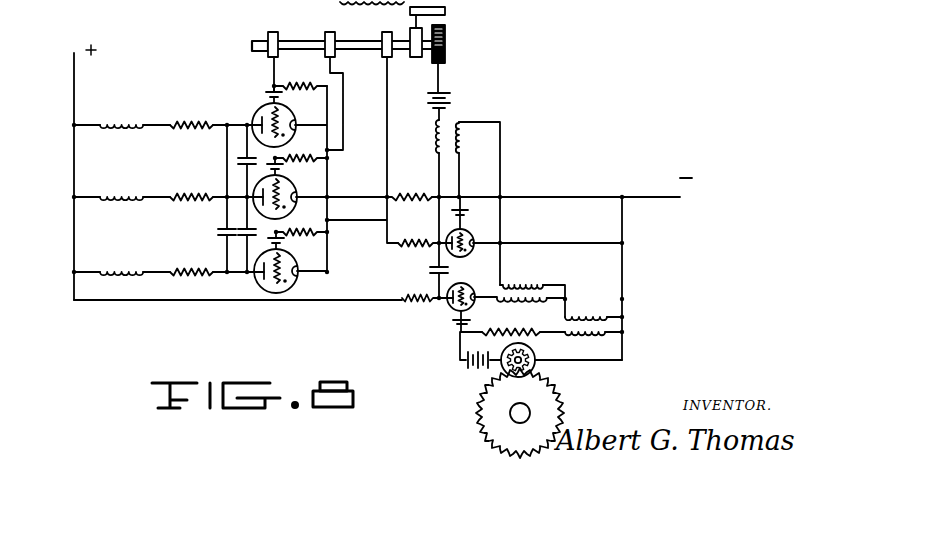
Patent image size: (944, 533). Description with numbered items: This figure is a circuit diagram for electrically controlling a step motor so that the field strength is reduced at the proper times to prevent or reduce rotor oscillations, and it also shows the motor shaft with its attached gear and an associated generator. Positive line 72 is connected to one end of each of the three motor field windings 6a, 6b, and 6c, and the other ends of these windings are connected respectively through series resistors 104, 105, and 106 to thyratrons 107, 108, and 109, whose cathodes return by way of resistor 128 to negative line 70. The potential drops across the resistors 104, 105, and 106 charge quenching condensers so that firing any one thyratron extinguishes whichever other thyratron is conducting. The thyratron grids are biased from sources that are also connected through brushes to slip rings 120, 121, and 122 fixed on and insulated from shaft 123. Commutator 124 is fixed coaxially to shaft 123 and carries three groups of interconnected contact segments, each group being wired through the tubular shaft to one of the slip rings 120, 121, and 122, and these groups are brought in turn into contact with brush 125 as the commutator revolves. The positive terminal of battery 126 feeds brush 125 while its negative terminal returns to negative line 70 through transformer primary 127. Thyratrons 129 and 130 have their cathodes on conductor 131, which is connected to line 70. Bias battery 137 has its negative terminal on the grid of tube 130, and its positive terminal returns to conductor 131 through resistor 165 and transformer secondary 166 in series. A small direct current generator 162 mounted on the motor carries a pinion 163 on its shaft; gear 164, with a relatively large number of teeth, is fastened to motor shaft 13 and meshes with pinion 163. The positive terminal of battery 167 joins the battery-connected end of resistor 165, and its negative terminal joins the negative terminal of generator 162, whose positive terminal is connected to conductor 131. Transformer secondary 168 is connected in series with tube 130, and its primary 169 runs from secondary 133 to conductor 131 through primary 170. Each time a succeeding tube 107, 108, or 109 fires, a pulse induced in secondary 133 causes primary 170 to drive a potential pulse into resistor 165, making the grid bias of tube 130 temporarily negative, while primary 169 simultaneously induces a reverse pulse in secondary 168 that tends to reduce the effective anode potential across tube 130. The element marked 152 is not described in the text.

The positive line 72 is at (74, 82).
The negative line 70 is at (640, 197).
The motor field winding 6a is at (118, 122).
The motor field winding 6b is at (118, 194).
The motor field winding 6c is at (120, 268).
The resistor 104 is at (187, 122).
The resistor 105 is at (190, 193).
The resistor 106 is at (190, 268).
The thyratron 107 is at (257, 107).
The thyratron 108 is at (294, 182).
The thyratron 109 is at (270, 293).
The slip ring 120 is at (275, 32).
The slip ring 121 is at (332, 32).
The slip ring 122 is at (385, 32).
The shaft 123 is at (263, 40).
The commutator 124 is at (446, 47).
The brush 125 is at (442, 70).
The battery 126 is at (452, 102).
The transformer primary 127 is at (435, 135).
The resistor 128 is at (408, 192).
The thyratron 129 is at (447, 232).
The thyratron 130 is at (447, 310).
The conductor 131 is at (624, 263).
The transformer secondary 133 is at (463, 143).
The bias battery 137 is at (455, 326).
The arm 152 is at (445, 11).
The direct current generator 162 is at (536, 366).
The pinion 163 is at (501, 364).
The gear 164 is at (533, 453).
The resistor 165 is at (518, 330).
The transformer secondary 166 is at (573, 335).
The battery 167 is at (467, 365).
The transformer secondary 168 is at (528, 305).
The transformer primary 169 is at (529, 284).
The transformer primary 170 is at (583, 313).
The motor shaft 13 is at (512, 419).